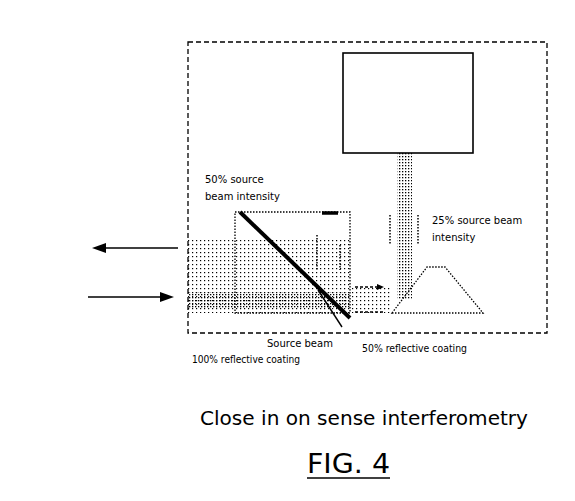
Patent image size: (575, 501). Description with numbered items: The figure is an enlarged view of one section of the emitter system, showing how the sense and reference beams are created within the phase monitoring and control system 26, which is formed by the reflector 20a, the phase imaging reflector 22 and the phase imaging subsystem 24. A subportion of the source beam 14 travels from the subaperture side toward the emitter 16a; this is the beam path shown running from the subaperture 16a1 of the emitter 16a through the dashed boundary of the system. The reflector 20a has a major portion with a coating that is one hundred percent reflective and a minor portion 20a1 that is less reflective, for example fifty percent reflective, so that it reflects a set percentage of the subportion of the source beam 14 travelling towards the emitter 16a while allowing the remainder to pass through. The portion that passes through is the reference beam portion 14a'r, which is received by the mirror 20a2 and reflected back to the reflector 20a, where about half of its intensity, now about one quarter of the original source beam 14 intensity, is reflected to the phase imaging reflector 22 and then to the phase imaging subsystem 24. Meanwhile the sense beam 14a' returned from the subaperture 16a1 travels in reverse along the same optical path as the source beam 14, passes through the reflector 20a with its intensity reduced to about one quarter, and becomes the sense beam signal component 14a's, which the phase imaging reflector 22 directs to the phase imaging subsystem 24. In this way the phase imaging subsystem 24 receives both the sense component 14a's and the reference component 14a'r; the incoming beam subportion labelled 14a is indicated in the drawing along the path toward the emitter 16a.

The phase monitoring and control system 26 is at (491, 42).
The phase imaging subsystem 24 is at (420, 150).
The phase imaging reflector 22 is at (446, 303).
The source beam reflector 20a is at (240, 212).
The minor portion 20a1 is at (342, 327).
The mirror 20a2 is at (320, 212).
The source beam 14a is at (259, 251).
The sense beam 14a' is at (235, 316).
The sense beam signal component 14a's is at (357, 213).
The reference beam portion 14a'r is at (396, 216).
The source beam 14 is at (280, 317).
The steered emitter 16a is at (114, 238).
The subaperture 16a1 is at (116, 279).